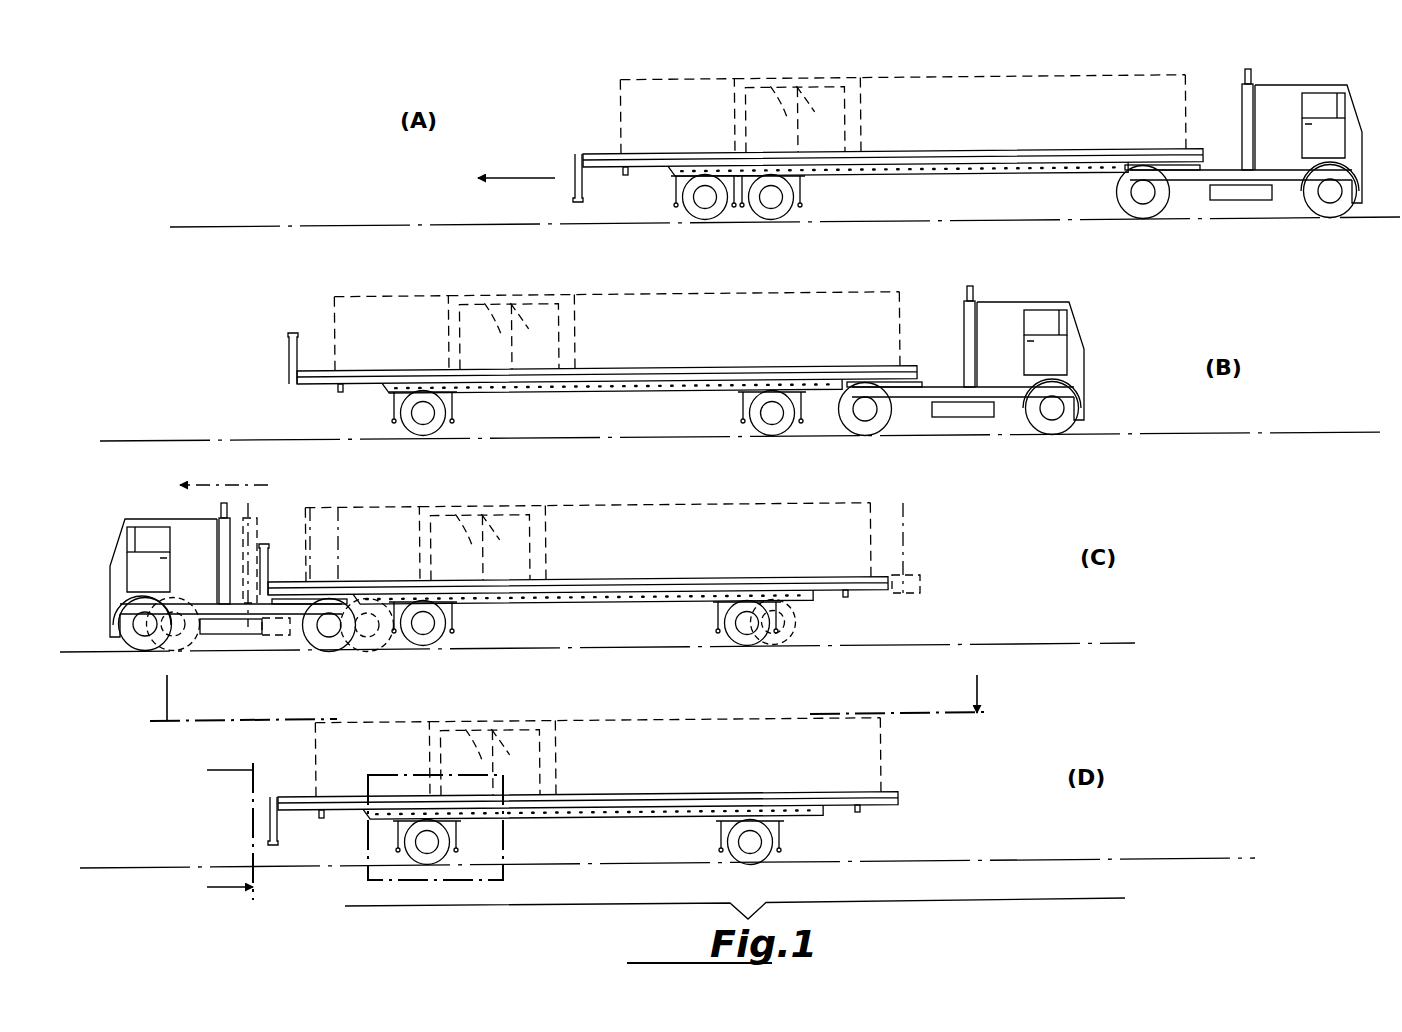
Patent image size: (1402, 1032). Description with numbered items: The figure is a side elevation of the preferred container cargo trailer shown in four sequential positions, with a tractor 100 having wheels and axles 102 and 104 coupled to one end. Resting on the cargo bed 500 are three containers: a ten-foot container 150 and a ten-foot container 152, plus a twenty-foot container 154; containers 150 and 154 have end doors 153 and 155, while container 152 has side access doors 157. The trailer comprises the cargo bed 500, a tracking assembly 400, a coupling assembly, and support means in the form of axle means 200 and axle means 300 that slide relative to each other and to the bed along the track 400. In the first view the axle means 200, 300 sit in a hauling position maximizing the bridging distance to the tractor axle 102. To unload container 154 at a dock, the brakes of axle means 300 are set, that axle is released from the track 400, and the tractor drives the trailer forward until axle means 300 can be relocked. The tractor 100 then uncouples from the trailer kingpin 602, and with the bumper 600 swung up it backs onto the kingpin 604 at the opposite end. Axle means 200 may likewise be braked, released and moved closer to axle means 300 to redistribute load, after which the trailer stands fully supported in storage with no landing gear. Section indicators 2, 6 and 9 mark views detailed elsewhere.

The tractor 100 is at (1365, 120).
The tractor axle 102 is at (1152, 210).
The tractor wheels and axle 104 is at (1333, 215).
The container 150 is at (668, 98).
The container 152 is at (822, 90).
The doors 153 is at (618, 128).
The container 154 is at (988, 85).
The doors 155 is at (1190, 108).
The side access doors 157 is at (805, 100).
The axle means 200 is at (700, 222).
The axle means 300 is at (803, 222).
The tracking assembly 400 is at (1000, 195).
The cargo bed 500 is at (600, 150).
The bumper 600 is at (575, 185).
The trailer kingpin 602 is at (858, 600).
The kingpin 604 is at (625, 176).
The section 2 outline 2 is at (503, 775).
The section line 6 is at (570, 693).
The section line 9 is at (217, 828).